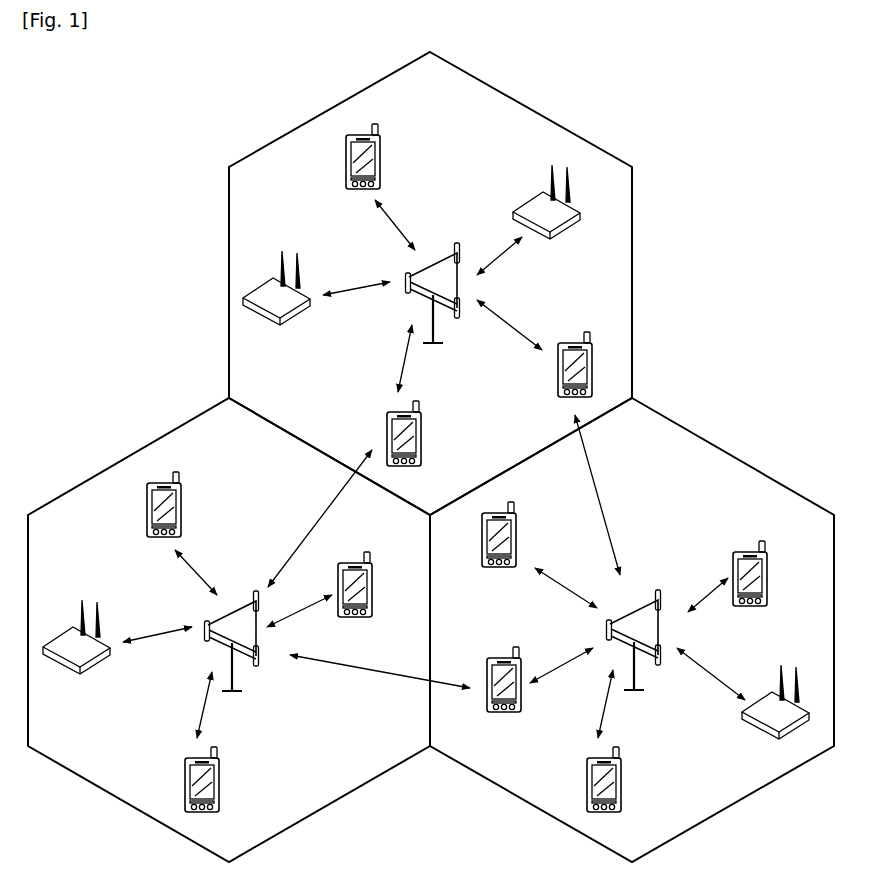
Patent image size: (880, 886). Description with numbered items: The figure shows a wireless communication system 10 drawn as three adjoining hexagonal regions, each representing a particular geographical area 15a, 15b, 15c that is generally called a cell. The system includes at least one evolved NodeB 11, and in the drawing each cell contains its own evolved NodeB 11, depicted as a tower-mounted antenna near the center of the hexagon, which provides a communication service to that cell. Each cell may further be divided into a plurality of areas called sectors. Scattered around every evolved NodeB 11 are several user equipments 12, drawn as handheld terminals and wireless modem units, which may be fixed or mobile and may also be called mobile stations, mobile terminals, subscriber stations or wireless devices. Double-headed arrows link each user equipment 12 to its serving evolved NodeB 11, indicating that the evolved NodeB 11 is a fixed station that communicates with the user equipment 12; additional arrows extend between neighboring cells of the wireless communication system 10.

The wireless communication system 10 is at (718, 172).
The evolved NodeB 11 is at (445, 258).
The user equipment 12 is at (381, 157).
The geographical area 15a is at (633, 270).
The geographical area 15b is at (762, 468).
The geographical area 15c is at (104, 470).